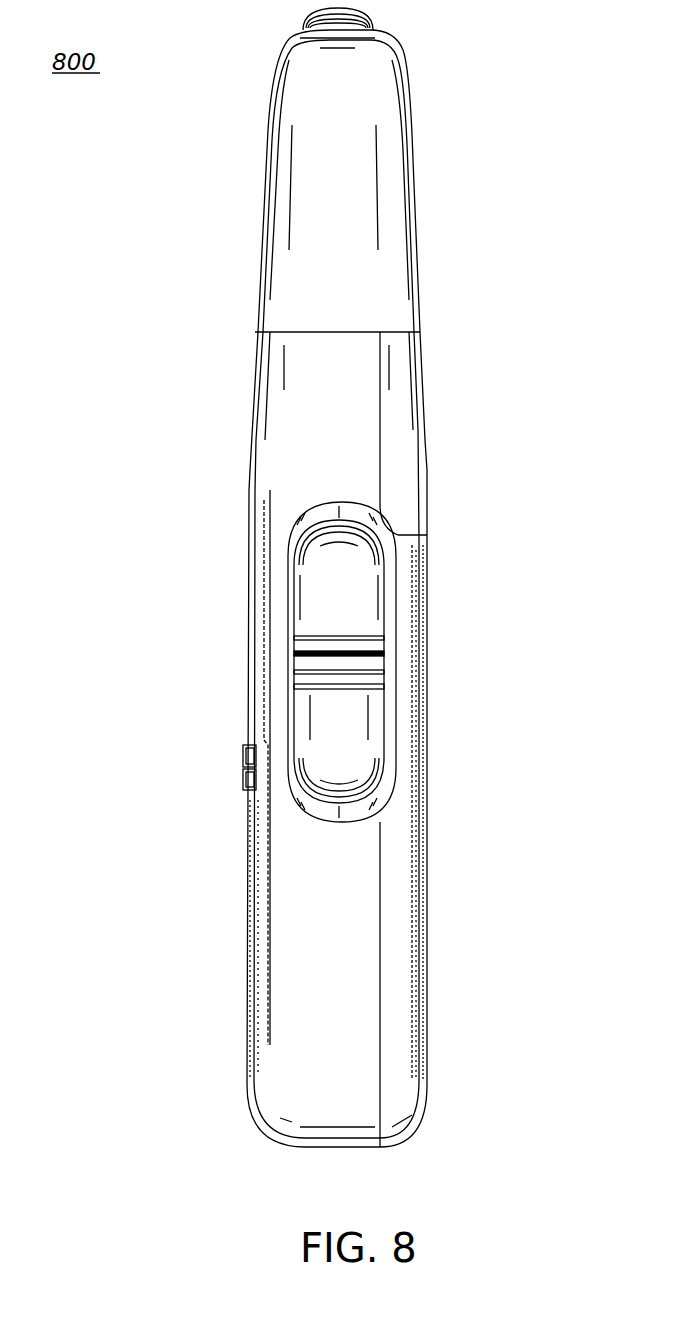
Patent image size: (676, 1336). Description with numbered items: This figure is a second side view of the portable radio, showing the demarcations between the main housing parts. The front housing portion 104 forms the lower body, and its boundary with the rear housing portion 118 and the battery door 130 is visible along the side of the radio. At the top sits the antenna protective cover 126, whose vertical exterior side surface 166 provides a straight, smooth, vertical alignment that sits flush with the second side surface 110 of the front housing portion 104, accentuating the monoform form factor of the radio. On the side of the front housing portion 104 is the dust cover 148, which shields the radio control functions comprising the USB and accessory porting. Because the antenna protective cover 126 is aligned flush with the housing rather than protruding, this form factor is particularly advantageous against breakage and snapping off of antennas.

The antenna protective cover 126 is at (440, 10).
The vertical exterior side surface 166 is at (323, 228).
The rear housing portion 118 is at (440, 328).
The battery door 130 is at (440, 545).
The dust cover 148 is at (322, 608).
The second side surface 110 is at (297, 938).
The front housing portion 104 is at (175, 327).